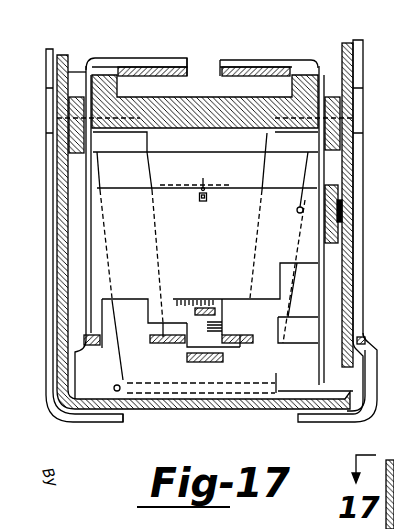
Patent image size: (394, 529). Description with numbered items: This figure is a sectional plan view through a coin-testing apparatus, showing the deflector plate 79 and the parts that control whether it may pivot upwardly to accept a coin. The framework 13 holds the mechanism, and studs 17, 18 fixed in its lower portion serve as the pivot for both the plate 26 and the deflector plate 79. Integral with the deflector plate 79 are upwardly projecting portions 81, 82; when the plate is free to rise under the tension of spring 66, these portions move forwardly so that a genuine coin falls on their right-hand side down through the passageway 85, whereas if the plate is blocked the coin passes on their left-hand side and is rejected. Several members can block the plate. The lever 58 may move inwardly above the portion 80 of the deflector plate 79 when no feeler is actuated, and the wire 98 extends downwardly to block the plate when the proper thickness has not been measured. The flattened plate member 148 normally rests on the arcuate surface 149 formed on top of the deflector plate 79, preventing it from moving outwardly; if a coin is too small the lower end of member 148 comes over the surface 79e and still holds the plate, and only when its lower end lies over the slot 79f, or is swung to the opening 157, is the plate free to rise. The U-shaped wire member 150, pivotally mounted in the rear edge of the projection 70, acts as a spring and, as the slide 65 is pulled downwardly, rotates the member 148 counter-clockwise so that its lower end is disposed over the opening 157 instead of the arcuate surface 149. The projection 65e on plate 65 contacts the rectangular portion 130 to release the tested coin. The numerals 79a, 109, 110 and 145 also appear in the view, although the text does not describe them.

The framework 13 is at (292, 80).
The stud 17 is at (316, 136).
The stud 18 is at (95, 137).
The plate 26 is at (78, 80).
The lever 58 is at (192, 360).
The plate or slide 65 is at (242, 345).
The projection 65e is at (385, 281).
The spring 66 is at (208, 172).
The projection 70 is at (113, 386).
The deflector plate 79 is at (333, 169).
The cup boss 79a is at (294, 340).
The surface 79e is at (120, 344).
The slot 79f is at (127, 308).
The portion 80 is at (224, 334).
The upwardly projecting portion 81 is at (250, 62).
The upwardly projecting portion 82 is at (173, 50).
The passageway 85 is at (191, 64).
The wire 98 is at (298, 206).
The block 109 is at (335, 198).
The contact 110 is at (343, 210).
The rectangular portion 130 is at (378, 323).
The shell flange 145 is at (72, 424).
The flattened plate member 148 is at (210, 304).
The arcuate surface 149 is at (196, 300).
The U-shaped wire member 150 is at (296, 394).
The opening 157 is at (237, 313).